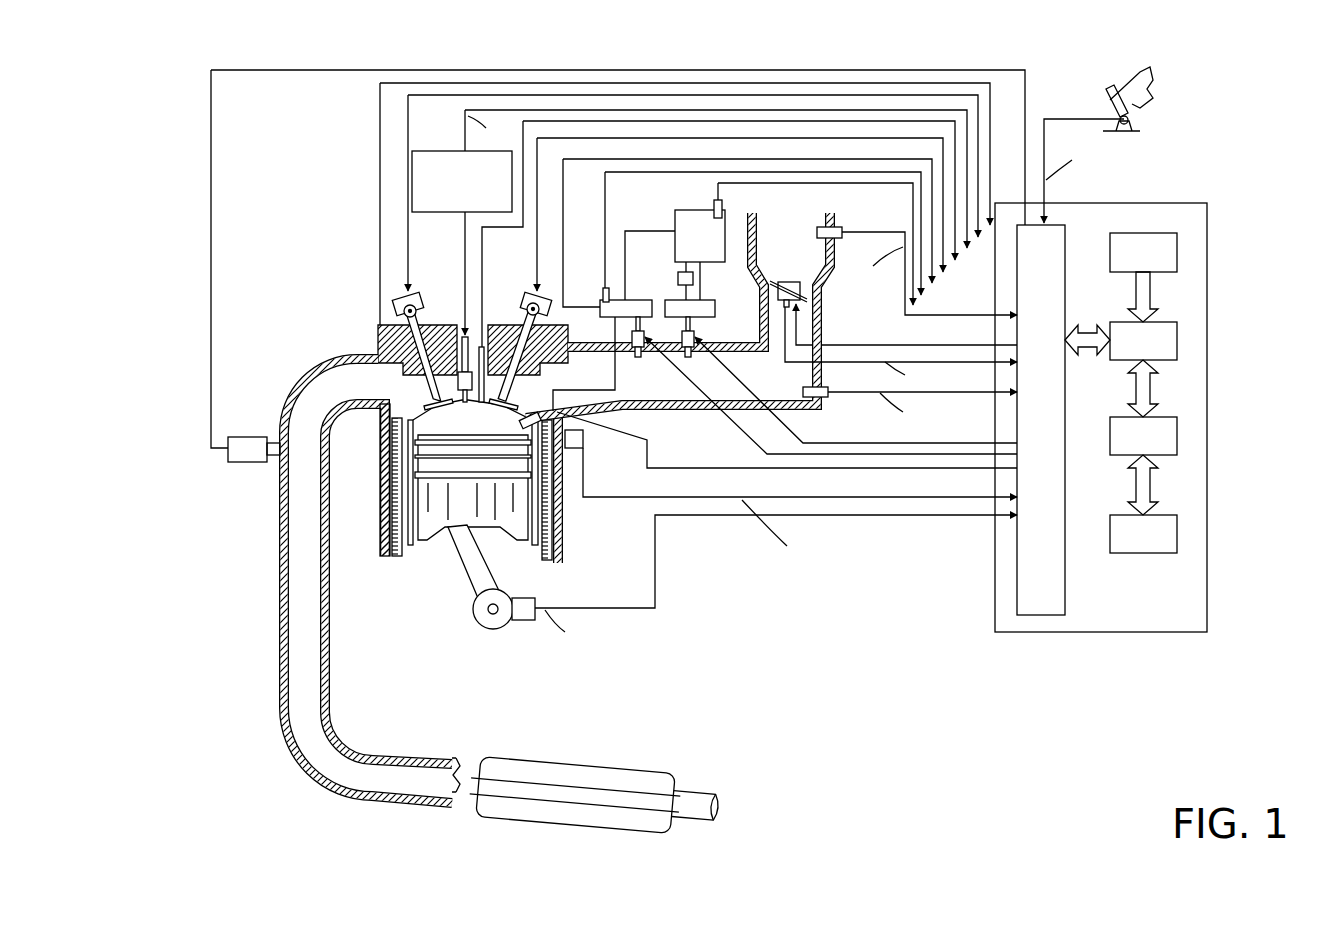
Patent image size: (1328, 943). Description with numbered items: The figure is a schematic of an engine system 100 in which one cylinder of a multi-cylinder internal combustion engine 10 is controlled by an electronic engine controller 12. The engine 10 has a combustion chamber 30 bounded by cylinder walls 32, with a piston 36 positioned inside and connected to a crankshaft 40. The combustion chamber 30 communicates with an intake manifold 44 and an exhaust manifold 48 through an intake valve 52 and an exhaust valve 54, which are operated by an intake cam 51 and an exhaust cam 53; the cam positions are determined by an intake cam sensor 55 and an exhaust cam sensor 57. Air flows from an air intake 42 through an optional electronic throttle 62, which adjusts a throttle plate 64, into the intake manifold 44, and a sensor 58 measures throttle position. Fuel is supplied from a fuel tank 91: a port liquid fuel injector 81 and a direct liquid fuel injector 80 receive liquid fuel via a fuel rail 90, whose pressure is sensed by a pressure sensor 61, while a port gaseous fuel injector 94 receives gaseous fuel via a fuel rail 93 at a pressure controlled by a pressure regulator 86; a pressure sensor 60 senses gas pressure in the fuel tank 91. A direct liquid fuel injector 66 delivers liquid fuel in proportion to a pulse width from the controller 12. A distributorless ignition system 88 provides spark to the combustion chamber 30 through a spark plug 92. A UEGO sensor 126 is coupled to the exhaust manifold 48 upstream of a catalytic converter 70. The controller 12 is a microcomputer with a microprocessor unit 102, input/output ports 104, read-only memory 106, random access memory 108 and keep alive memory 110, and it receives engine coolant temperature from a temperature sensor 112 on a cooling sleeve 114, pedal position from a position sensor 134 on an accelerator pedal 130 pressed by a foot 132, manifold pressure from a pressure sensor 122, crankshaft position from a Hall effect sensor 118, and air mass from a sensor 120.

The internal combustion engine 10 is at (318, 282).
The electronic engine controller 12 is at (1199, 204).
The combustion chamber 30 is at (470, 425).
The cylinder walls 32 is at (416, 550).
The piston 36 is at (456, 515).
The crankshaft 40 is at (484, 628).
The air intake 42 is at (803, 257).
The intake manifold 44 is at (780, 387).
The exhaust manifold 48 is at (361, 391).
The intake cam 51 is at (528, 296).
The intake valve 52 is at (525, 395).
The exhaust cam 53 is at (412, 295).
The exhaust valve 54 is at (385, 345).
The intake cam sensor 55 is at (546, 308).
The exhaust cam sensor 57 is at (402, 310).
The throttle position sensor 58 is at (782, 306).
The pressure sensor 60 is at (716, 200).
The pressure sensor 61 is at (604, 288).
The electronic throttle 62 is at (808, 290).
The throttle plate 64 is at (776, 286).
The direct liquid fuel injector 66 is at (483, 345).
The catalytic converter 70 is at (487, 754).
The direct liquid fuel injector 80 is at (578, 418).
The port liquid fuel injector 81 is at (646, 351).
The pressure regulator 86 is at (680, 277).
The distributorless ignition system 88 is at (436, 150).
The fuel rail 90 is at (630, 300).
The fuel tank 91 is at (711, 247).
The spark plug 92 is at (458, 335).
The fuel rail 93 is at (704, 300).
The port gaseous fuel injector 94 is at (696, 351).
The engine system 100 is at (160, 100).
The microprocessor unit 102 is at (1178, 340).
The input/output ports 104 is at (1068, 233).
The read-only memory 106 is at (1178, 250).
The random access memory 108 is at (1178, 435).
The keep alive memory 110 is at (1178, 533).
The temperature sensor 112 is at (584, 450).
The cooling sleeve 114 is at (550, 514).
The Hall effect sensor 118 is at (521, 622).
The air mass sensor 120 is at (832, 226).
The pressure sensor 122 is at (830, 398).
The universal exhaust gas oxygen sensor 126 is at (228, 452).
The accelerator pedal 130 is at (1105, 90).
The foot 132 is at (1153, 82).
The position sensor 134 is at (1134, 120).